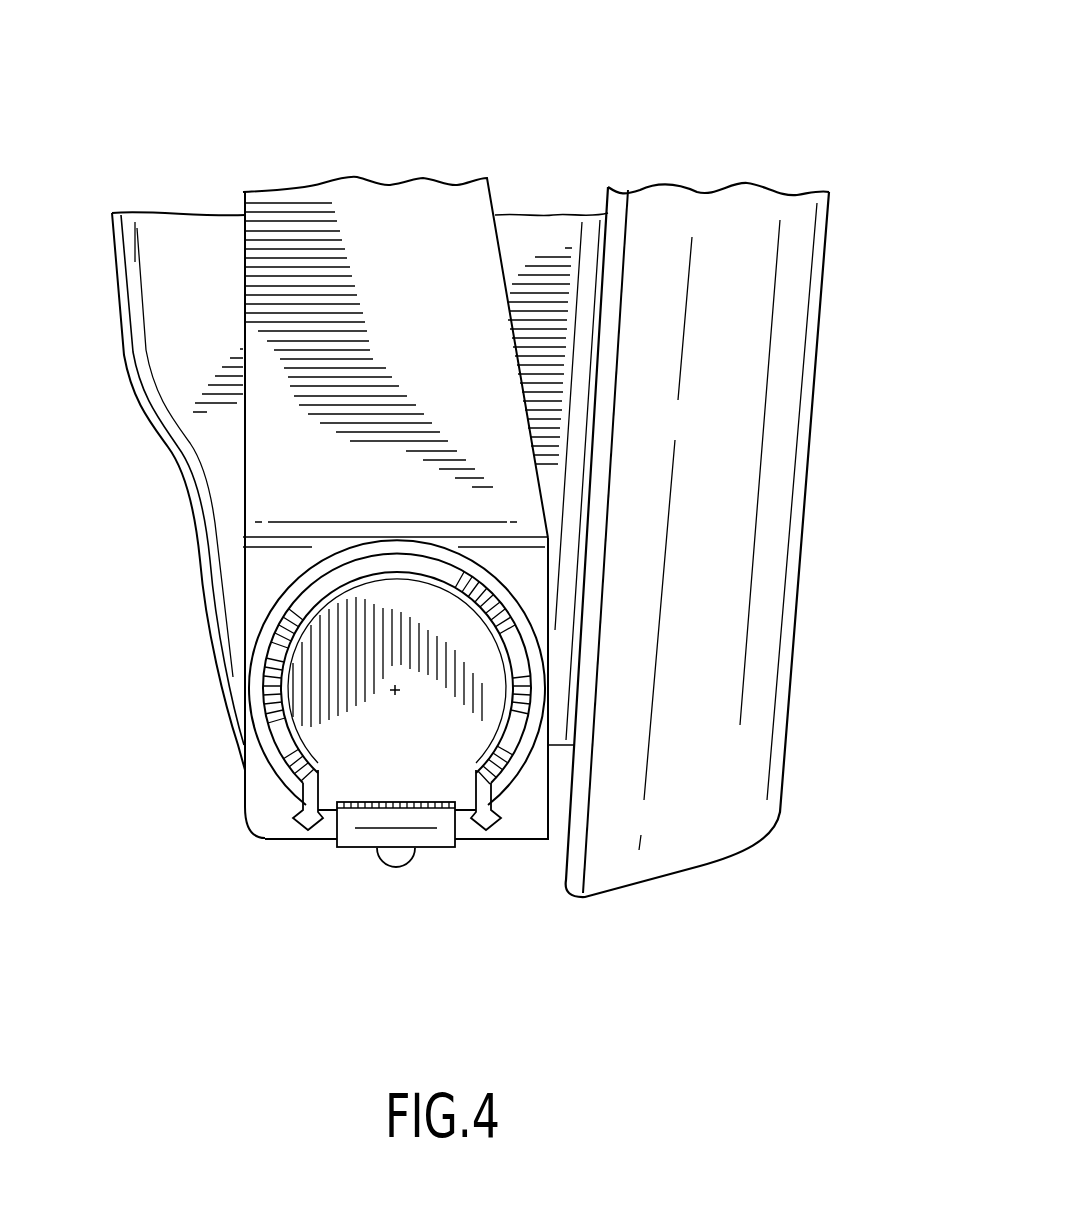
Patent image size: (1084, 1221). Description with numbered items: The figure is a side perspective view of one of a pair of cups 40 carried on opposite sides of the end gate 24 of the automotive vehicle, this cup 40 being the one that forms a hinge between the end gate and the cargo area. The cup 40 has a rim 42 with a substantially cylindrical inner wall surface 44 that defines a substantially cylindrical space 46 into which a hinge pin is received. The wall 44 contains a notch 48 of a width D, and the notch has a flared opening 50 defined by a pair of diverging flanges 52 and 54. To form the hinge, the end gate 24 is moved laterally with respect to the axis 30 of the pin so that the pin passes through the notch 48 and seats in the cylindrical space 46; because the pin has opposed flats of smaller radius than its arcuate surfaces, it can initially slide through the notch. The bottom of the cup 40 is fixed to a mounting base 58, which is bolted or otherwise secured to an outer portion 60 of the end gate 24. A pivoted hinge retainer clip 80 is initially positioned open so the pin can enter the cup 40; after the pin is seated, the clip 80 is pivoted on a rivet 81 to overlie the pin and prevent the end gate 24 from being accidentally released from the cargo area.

The end gate 24 is at (806, 152).
The axis 30 is at (395, 688).
The cup 40 is at (283, 603).
The rim 42 is at (280, 648).
The inner wall surface 44 is at (500, 655).
The cylindrical space 46 is at (330, 688).
The notch 48 is at (328, 808).
The flared opening 50 is at (470, 828).
The diverging flange 52 is at (290, 820).
The diverging flange 54 is at (545, 842).
The mounting base 58 is at (373, 217).
The outer portion 60 is at (175, 440).
The hinge retainer clip 80 is at (443, 848).
The rivet 81 is at (398, 862).